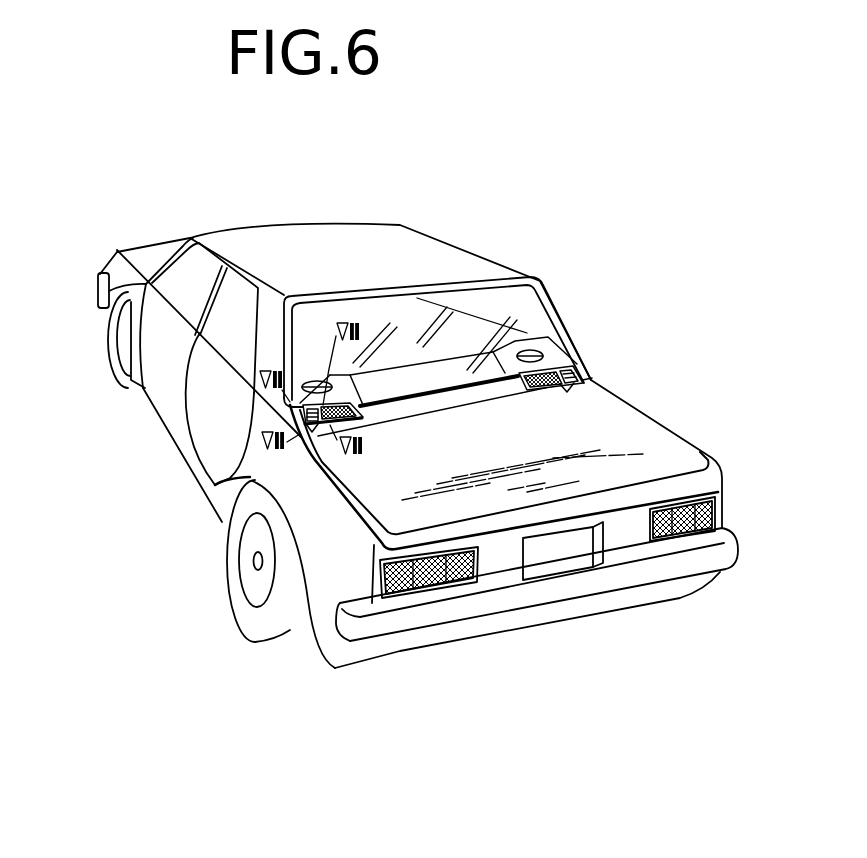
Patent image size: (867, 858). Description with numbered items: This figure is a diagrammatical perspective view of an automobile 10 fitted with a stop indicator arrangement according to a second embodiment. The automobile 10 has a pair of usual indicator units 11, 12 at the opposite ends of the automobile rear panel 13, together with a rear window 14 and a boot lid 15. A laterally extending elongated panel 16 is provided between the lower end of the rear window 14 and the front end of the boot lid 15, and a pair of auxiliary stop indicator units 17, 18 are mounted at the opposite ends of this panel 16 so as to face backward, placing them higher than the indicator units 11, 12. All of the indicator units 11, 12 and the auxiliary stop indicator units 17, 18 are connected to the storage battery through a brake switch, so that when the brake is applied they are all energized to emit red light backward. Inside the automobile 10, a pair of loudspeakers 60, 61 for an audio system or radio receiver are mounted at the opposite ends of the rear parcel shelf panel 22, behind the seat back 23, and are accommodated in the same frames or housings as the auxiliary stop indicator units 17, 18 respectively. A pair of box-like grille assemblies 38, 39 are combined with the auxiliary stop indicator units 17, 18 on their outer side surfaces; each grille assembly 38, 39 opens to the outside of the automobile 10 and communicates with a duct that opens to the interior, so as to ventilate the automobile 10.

The automobile 10 is at (233, 230).
The indicator unit 11 is at (427, 587).
The indicator unit 12 is at (688, 535).
The automobile rear panel 13 is at (628, 542).
The rear window 14 is at (517, 302).
The boot lid 15 is at (623, 440).
The laterally extending elongated panel 16 is at (462, 398).
The auxiliary stop indicator unit 17 is at (357, 422).
The auxiliary stop indicator unit 18 is at (543, 388).
The rear parcel shelf panel 22 is at (410, 380).
The seat back 23 is at (523, 330).
The box-like grille assembly 38 is at (325, 430).
The box-like grille assembly 39 is at (567, 384).
The loudspeaker 60 is at (313, 380).
The loudspeaker 61 is at (550, 360).